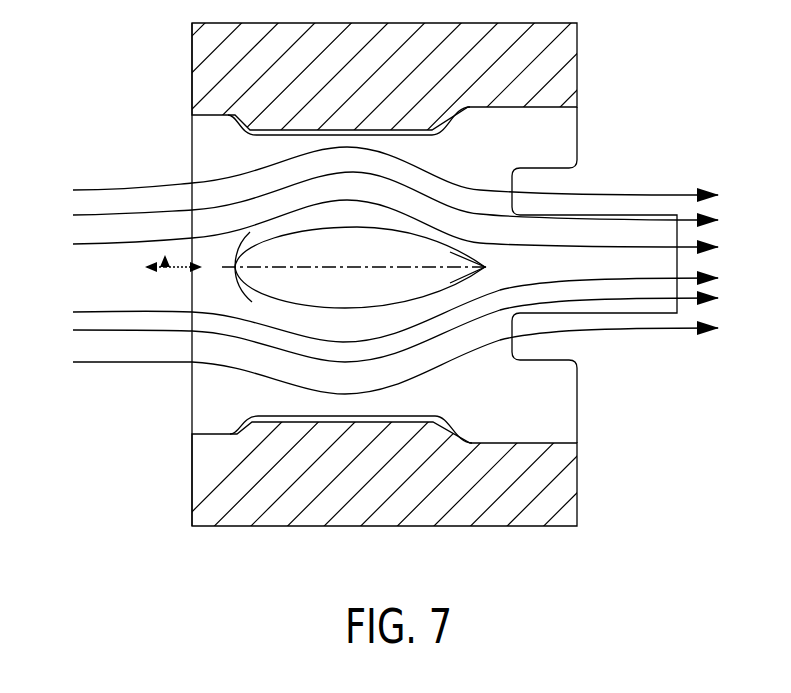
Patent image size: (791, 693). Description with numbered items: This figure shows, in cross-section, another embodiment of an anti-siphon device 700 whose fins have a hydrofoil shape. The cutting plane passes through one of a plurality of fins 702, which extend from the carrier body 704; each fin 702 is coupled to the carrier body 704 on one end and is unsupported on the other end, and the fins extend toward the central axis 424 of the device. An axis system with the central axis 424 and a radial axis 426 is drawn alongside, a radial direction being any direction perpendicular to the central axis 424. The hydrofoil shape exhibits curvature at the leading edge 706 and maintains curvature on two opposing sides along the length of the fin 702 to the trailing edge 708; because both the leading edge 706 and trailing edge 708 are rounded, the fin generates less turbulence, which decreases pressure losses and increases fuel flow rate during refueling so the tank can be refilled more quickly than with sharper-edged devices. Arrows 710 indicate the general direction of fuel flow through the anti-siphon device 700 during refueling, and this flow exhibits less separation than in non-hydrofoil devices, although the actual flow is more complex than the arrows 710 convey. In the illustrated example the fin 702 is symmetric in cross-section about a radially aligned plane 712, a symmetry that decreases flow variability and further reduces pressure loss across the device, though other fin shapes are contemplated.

The anti-siphon device 700 is at (100, 81).
The carrier body 704 is at (181, 52).
The fin 702 is at (339, 217).
The leading edge 706 is at (231, 253).
The trailing edge 708 is at (492, 264).
The arrows 710 is at (148, 188).
The radially aligned plane 712 is at (303, 267).
The central axis 424 is at (172, 272).
The radial axis 426 is at (155, 262).